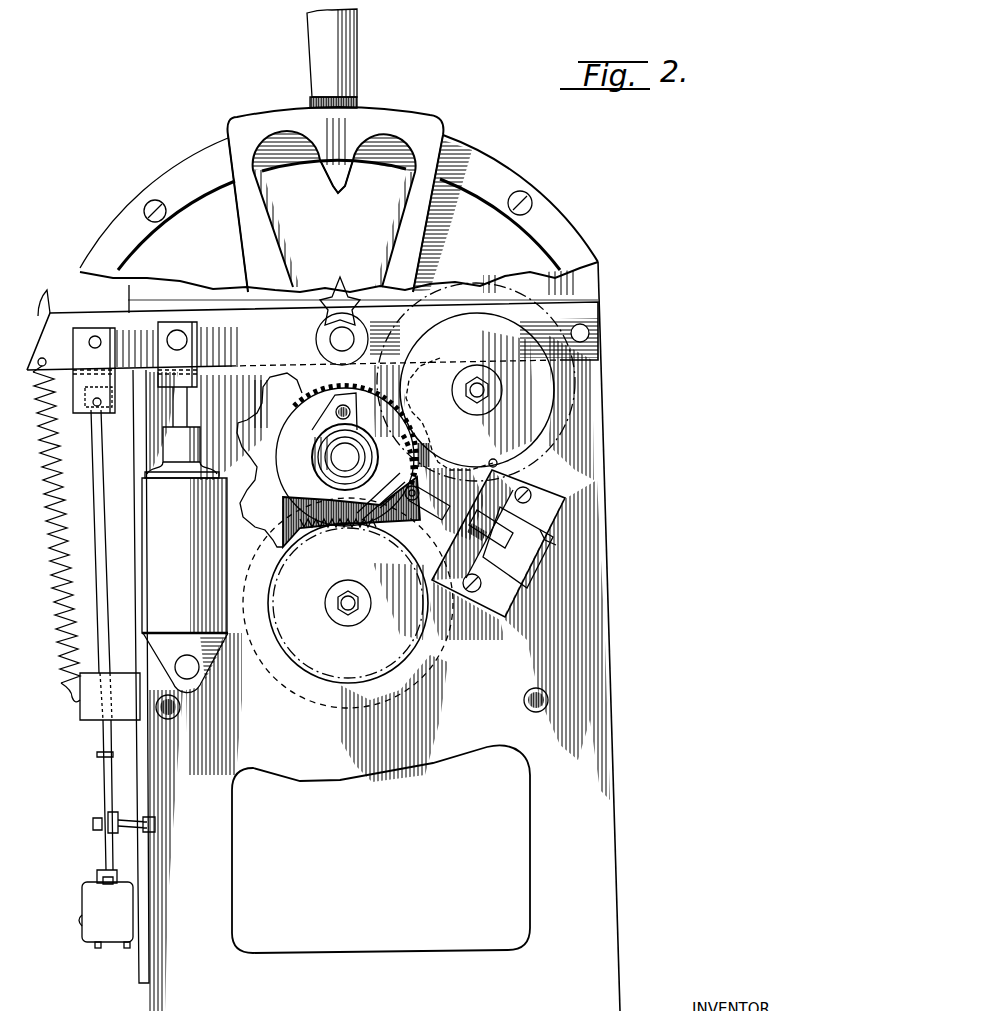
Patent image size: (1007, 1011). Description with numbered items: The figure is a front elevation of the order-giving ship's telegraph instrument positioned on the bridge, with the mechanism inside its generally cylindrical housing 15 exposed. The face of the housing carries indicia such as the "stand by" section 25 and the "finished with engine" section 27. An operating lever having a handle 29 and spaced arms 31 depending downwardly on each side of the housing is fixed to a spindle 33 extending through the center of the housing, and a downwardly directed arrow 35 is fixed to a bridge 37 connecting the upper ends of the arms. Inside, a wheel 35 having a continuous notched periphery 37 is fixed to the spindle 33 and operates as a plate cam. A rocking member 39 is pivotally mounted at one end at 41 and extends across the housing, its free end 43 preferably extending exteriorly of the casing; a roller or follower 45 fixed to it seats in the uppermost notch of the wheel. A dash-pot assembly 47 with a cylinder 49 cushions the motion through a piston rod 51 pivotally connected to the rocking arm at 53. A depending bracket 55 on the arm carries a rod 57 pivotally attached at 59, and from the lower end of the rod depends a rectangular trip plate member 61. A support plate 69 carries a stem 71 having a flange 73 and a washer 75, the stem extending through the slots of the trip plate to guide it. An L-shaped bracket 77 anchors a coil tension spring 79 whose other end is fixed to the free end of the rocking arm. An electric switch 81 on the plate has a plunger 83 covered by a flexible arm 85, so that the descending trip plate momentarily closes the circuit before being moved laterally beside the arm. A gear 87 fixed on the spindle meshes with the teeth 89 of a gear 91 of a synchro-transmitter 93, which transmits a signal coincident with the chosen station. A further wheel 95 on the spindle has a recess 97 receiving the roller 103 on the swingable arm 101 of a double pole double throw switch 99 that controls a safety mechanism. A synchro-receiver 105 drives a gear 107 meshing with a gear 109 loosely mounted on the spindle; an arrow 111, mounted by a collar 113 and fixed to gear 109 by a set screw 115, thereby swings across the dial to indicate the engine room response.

The housing 15 is at (545, 217).
The stand by section 25 is at (202, 200).
The finished with engine section 27 is at (485, 208).
The handle 29 is at (347, 50).
The spaced arms 31 is at (233, 167).
The spindle 33 is at (332, 457).
The wheel 35 is at (340, 190).
The notched periphery 37 is at (373, 117).
The rocking member 39 is at (563, 303).
The pivot 41 is at (588, 335).
The free end 43 is at (48, 310).
The roller or follower 45 is at (320, 338).
The dash-pot assembly 47 is at (230, 652).
The cylinder 49 is at (218, 573).
The piston rod 51 is at (180, 410).
The pivotal connection 53 is at (180, 332).
The depending bracket 55 is at (97, 357).
The rod 57 is at (100, 593).
The pivotal attachment 59 is at (97, 403).
The trip plate member 61 is at (100, 783).
The support plate 69 is at (143, 860).
The stem 71 is at (123, 817).
The flange 73 is at (113, 810).
The washer 75 is at (98, 828).
The L-shaped bracket 77 is at (87, 720).
The coil tension spring 79 is at (57, 580).
The electric switch 81 is at (112, 933).
The plunger 83 is at (108, 884).
The flexible arm 85 is at (98, 877).
The gear 87 is at (351, 517).
The teeth 89 is at (385, 534).
The gear 91 is at (368, 655).
The synchro-transmitter 93 is at (442, 663).
The wheel 95 is at (378, 514).
The recess 97 is at (407, 443).
The double pole double throw switch 99 is at (495, 602).
The swingable arm 101 is at (433, 528).
The roller 103 is at (425, 485).
The synchro-receiver 105 is at (575, 460).
The gear 107 is at (423, 420).
The gear 109 is at (312, 395).
The arrow 111 is at (357, 302).
The collar 113 is at (325, 432).
The set screw 115 is at (338, 412).